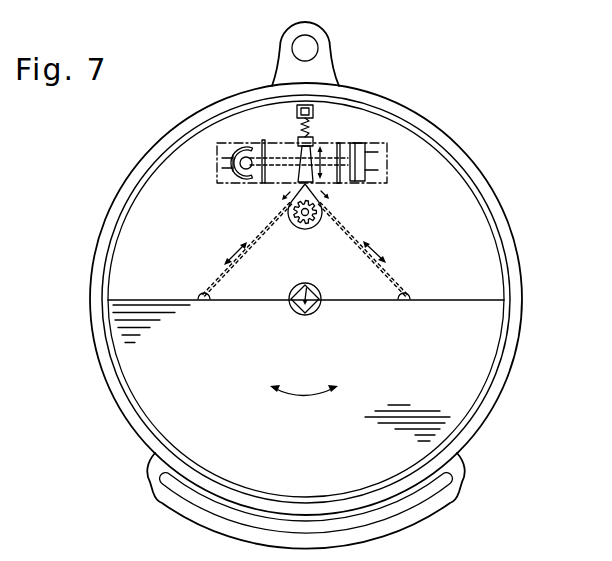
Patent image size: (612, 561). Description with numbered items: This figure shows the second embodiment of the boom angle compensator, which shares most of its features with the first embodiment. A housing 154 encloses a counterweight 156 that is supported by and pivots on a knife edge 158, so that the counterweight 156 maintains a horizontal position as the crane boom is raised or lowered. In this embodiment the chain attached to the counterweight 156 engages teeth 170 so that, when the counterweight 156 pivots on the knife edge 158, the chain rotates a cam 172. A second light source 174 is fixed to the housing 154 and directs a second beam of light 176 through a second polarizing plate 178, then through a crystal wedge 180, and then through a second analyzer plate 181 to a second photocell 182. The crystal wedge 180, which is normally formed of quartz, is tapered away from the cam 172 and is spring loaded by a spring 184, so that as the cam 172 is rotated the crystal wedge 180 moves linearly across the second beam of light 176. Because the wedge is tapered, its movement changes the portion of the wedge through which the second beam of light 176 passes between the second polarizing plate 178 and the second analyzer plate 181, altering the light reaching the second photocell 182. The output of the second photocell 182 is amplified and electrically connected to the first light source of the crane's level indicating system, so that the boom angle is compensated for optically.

The housing 154 is at (131, 171).
The counterweight 156 is at (482, 377).
The knife edge 158 is at (320, 303).
The teeth 170 is at (302, 224).
The cam 172 is at (317, 203).
The second light source 174 is at (245, 170).
The second beam of light 176 is at (253, 143).
The second polarizing plate 178 is at (263, 143).
The crystal wedge 180 is at (299, 176).
The second analyzer plate 181 is at (341, 146).
The second photocell 182 is at (357, 182).
The spring 184 is at (311, 130).